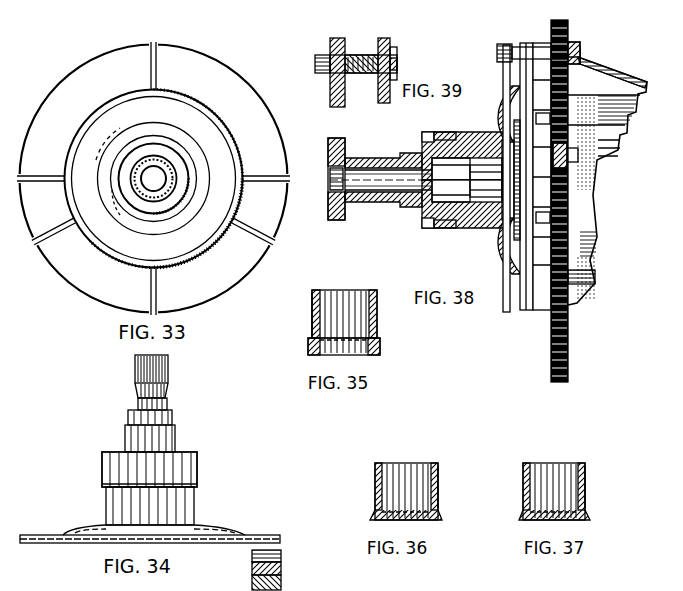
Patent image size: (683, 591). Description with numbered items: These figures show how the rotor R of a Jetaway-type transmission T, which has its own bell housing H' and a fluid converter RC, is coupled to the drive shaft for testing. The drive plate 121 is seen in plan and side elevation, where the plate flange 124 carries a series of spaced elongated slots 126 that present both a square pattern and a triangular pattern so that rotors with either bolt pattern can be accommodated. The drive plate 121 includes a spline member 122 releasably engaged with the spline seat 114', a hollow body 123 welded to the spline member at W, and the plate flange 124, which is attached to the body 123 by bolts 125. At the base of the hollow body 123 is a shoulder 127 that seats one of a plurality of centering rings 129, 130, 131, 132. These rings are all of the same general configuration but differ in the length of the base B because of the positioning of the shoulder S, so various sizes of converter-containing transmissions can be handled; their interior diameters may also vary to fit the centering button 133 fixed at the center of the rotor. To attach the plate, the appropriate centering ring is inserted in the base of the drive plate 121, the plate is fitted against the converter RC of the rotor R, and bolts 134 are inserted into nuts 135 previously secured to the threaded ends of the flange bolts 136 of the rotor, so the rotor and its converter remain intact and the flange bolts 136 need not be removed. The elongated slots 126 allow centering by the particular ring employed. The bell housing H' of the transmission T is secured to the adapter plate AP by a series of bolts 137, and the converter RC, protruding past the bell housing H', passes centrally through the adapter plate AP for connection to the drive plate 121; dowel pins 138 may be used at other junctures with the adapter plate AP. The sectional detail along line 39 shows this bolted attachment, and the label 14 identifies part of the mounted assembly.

In FIG. 38, the wheel hub body 14 is at (590, 60).
In FIG. 38, the bolt 39 is at (545, 42).
In FIG. 38, the spline seat 114' is at (335, 196).
In FIG. 33, the drive plate 121 is at (238, 104).
In FIG. 34, the drive plate 121 is at (197, 466).
In FIG. 38, the drive plate 121 is at (362, 195).
In FIG. 38, the spline member 122 is at (376, 158).
In FIG. 38, the body 123 is at (470, 228).
In FIG. 38, the plate flange 124 is at (503, 295).
In FIG. 38, the bolts 125 is at (503, 136).
In FIG. 33, the slots 126 is at (156, 62).
In FIG. 38, the shoulder 127 is at (437, 225).
In FIG. 38, the centering ring 129 is at (468, 172).
In FIG. 35, the centering ring 130 is at (372, 306).
In FIG. 36, the centering ring 131 is at (440, 476).
In FIG. 37, the centering ring 132 is at (587, 476).
In FIG. 38, the centering button 133 is at (500, 176).
In FIG. 39, the bolts 134 is at (320, 55).
In FIG. 39, the nuts 135 is at (352, 76).
In FIG. 39, the flange bolts 136 is at (398, 65).
In FIG. 38, the flange bolts 136 is at (557, 140).
In FIG. 38, the bolts 137 is at (620, 148).
In FIG. 38, the dowel pins 138 is at (540, 240).
In FIG. 35, the shoulder S is at (306, 336).
In FIG. 36, the shoulder S is at (441, 510).
In FIG. 37, the shoulder S is at (589, 510).
In FIG. 35, the base B is at (381, 349).
In FIG. 36, the base B is at (445, 518).
In FIG. 37, the base B is at (592, 518).
In FIG. 38, the weld W is at (455, 132).
In FIG. 38, the rotor R is at (547, 48).
In FIG. 38, the fluid converter RC is at (540, 300).
In FIG. 38, the adapter plate AP is at (568, 354).
In FIG. 38, the transmission T is at (620, 72).
In FIG. 38, the bell housing H' is at (600, 277).